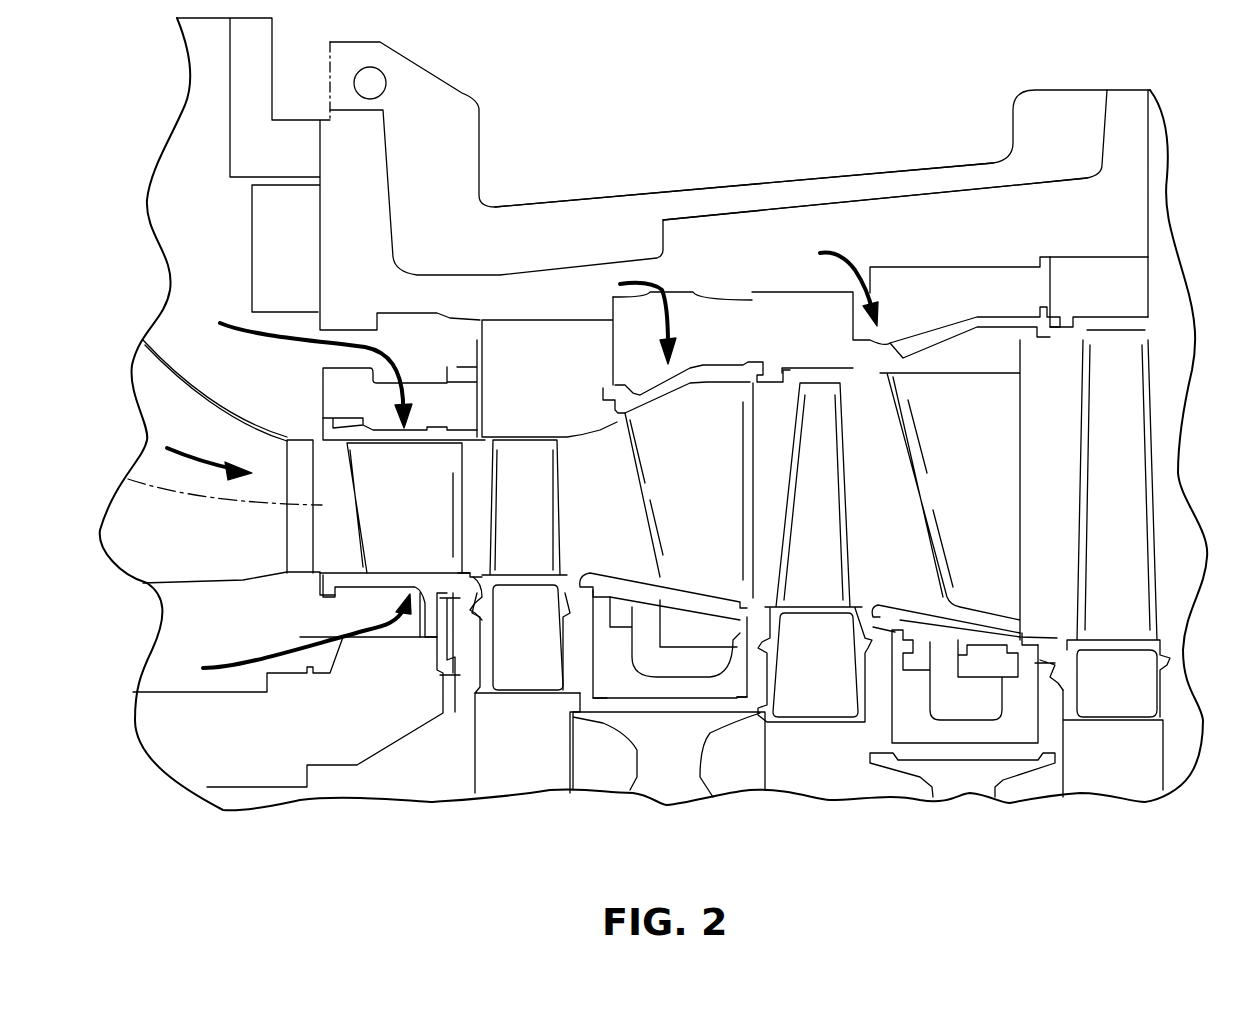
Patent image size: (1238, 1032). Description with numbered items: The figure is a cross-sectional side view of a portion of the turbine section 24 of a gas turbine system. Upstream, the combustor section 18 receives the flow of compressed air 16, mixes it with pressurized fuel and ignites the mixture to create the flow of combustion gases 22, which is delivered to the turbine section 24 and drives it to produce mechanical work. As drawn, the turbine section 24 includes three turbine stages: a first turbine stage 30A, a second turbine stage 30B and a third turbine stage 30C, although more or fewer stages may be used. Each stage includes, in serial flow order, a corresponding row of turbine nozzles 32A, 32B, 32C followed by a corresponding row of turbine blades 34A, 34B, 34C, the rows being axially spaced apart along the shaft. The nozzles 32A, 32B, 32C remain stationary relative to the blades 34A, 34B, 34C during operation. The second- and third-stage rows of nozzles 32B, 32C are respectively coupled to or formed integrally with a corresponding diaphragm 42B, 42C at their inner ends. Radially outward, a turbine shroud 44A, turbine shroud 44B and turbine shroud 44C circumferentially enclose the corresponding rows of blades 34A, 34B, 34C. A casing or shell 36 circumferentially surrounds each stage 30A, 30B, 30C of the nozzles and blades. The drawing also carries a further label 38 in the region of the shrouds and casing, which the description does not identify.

The flow of compressed air 16 is at (222, 322).
The combustor section 18 is at (163, 327).
The flow of combustion gases 22 is at (185, 450).
The turbine section 24 is at (578, 158).
The first turbine stage 30A is at (440, 772).
The second turbine stage 30B is at (745, 785).
The third turbine stage 30C is at (1040, 792).
The row of turbine nozzles 32A is at (428, 521).
The row of turbine nozzles 32B is at (721, 499).
The row of turbine nozzles 32C is at (993, 479).
The row of turbine blades 34A is at (551, 559).
The row of turbine blades 34B is at (840, 564).
The row of turbine blades 34C is at (1140, 594).
The casing or shell 36 is at (765, 227).
The cooling airflow 38 is at (662, 290).
The diaphragm 42B is at (668, 690).
The diaphragm 42C is at (1027, 725).
The turbine shroud 44A is at (548, 383).
The turbine shroud 44B is at (810, 350).
The turbine shroud 44C is at (1073, 300).